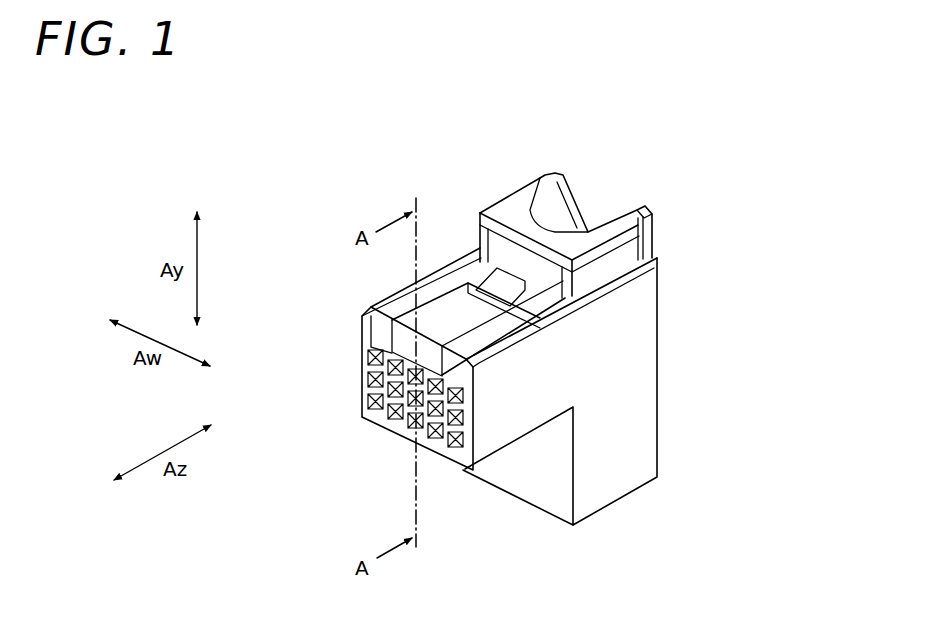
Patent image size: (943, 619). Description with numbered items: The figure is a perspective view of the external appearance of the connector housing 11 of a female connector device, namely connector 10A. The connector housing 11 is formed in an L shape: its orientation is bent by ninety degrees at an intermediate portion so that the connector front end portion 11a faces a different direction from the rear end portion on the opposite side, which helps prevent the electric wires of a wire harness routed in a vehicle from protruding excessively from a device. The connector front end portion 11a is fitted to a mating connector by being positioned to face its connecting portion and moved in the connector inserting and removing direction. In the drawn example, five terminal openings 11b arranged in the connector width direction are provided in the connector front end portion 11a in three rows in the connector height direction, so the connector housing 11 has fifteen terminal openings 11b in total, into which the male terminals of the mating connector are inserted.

The connector 10A is at (692, 354).
The connector housing 11 is at (622, 214).
The connector front end portion 11a is at (359, 338).
The terminal openings 11b is at (371, 376).